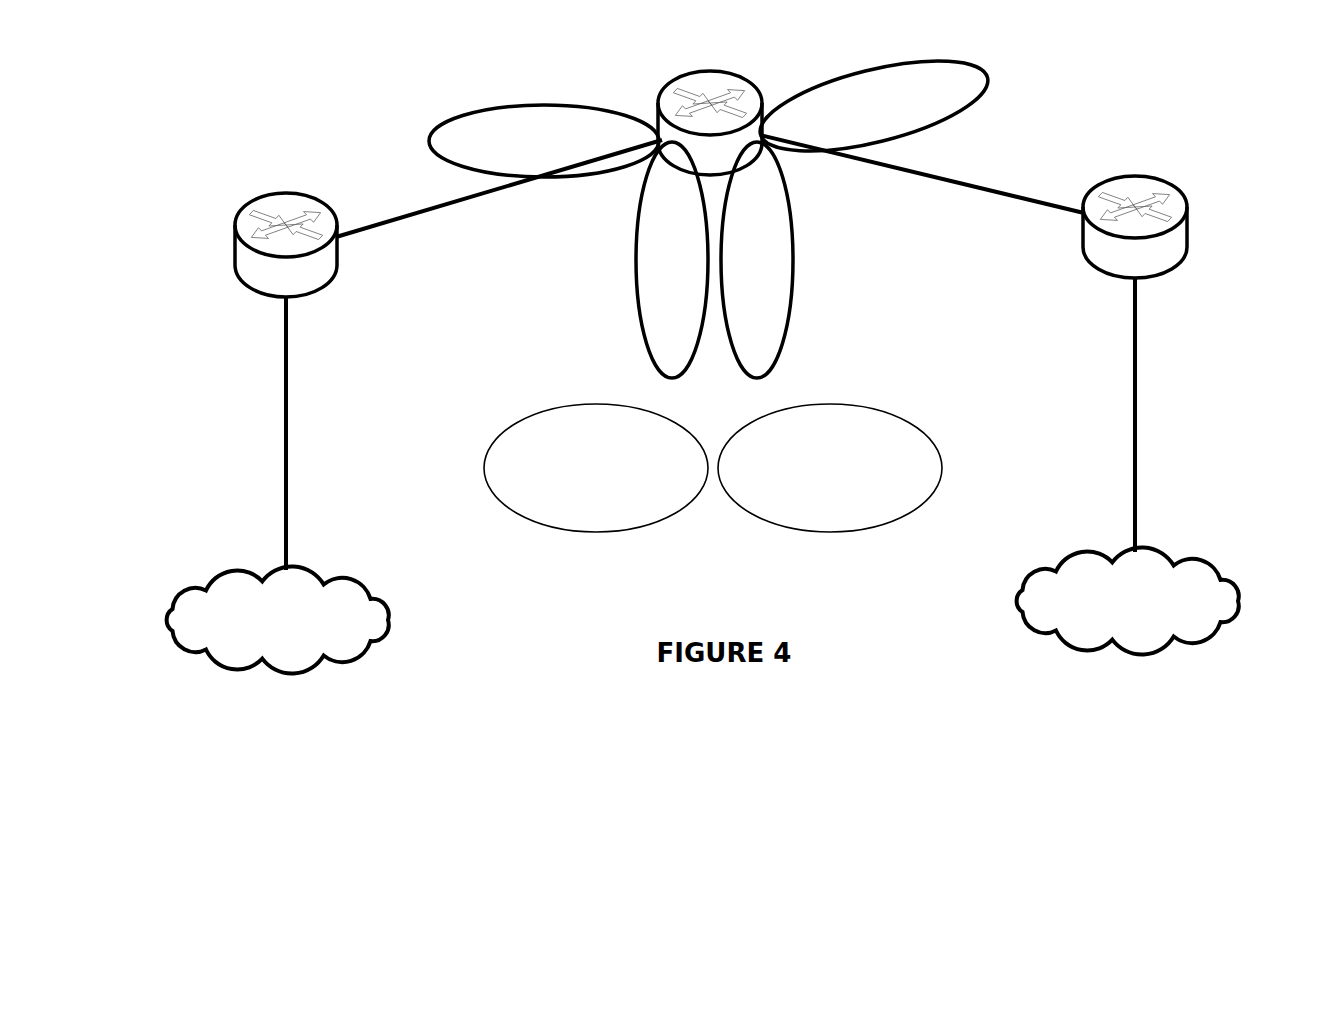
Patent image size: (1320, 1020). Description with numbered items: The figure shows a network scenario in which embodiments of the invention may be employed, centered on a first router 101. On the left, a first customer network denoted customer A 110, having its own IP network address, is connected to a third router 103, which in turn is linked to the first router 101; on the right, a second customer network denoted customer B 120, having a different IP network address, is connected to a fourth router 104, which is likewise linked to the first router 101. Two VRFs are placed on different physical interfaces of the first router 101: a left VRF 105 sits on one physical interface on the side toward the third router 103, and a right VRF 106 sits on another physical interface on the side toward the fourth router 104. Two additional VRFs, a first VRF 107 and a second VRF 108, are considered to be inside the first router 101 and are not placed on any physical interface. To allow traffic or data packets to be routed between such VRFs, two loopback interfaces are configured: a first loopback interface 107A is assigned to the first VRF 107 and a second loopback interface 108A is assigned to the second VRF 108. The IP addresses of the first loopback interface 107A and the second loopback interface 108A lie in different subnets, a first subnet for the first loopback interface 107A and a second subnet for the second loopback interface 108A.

The router R1 101 is at (725, 70).
The router R3 103 is at (240, 250).
The router R4 104 is at (1172, 268).
The L-VRF 105 is at (531, 104).
The R-VRF 106 is at (950, 63).
The VRF1 107 is at (672, 275).
The VRF2 108 is at (757, 275).
The Loopback1 (LB1) 107A is at (596, 480).
The Loopback2 (LB2) 108A is at (830, 480).
The customer A network (Cust-A) 110 is at (278, 650).
The customer B network (Cust-B) 120 is at (1128, 638).